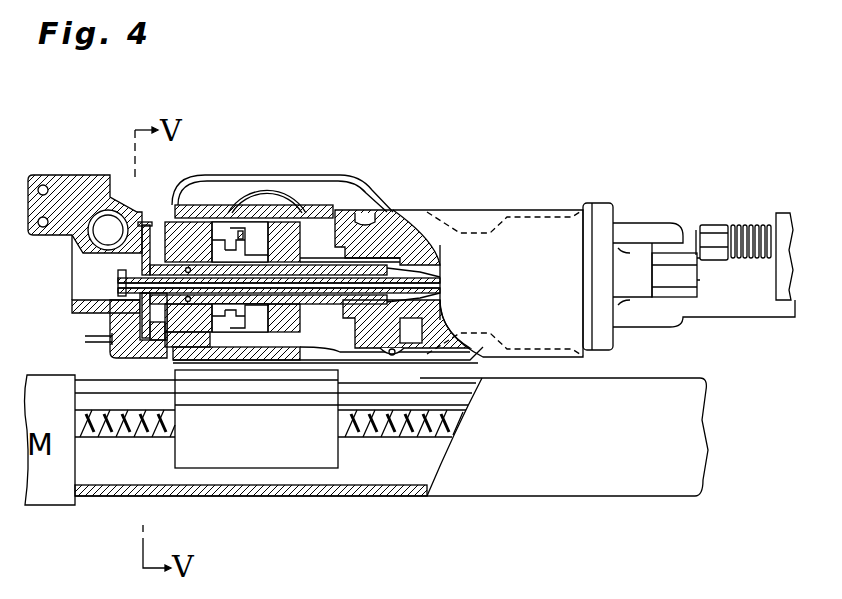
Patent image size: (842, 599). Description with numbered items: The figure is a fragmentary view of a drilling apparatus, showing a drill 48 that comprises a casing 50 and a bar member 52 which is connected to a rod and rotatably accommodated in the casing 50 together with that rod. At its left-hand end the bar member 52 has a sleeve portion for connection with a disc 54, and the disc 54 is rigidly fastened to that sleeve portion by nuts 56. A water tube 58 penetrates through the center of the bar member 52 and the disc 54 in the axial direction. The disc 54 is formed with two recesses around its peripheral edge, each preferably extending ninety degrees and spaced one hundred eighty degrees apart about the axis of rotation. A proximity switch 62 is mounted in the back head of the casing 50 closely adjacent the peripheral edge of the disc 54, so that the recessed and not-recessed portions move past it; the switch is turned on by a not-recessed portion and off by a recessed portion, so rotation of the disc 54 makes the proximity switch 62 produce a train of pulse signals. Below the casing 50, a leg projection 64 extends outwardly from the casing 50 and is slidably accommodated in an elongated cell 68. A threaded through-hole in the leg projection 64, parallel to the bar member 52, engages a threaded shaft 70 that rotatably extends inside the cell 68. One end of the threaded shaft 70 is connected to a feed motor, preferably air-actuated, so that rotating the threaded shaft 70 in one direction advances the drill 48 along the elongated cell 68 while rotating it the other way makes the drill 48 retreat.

The drill 48 is at (594, 233).
The casing 50 is at (420, 210).
The bar member 52 is at (313, 268).
The disc 54 is at (152, 243).
The nuts 56 is at (125, 301).
The water tube 58 is at (118, 288).
The proximity switch 62 is at (130, 350).
The leg projection 64 is at (278, 455).
The elongated cell 68 is at (602, 455).
The threaded shaft 70 is at (400, 425).